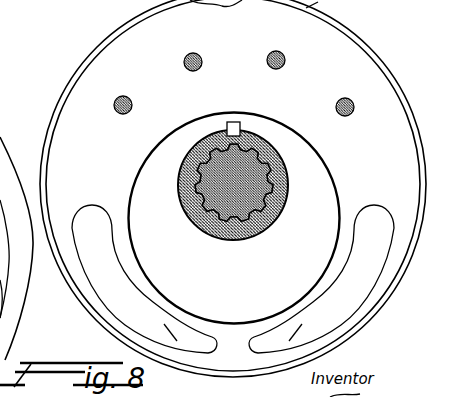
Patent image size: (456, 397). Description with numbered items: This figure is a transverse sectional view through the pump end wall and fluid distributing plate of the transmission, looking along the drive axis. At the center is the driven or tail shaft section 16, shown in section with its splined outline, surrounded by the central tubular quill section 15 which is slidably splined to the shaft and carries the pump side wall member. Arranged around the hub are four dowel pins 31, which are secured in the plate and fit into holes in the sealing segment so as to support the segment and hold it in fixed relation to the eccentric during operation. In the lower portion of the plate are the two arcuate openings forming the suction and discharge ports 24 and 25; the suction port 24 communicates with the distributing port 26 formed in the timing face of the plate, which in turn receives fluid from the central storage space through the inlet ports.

The central tubular quill section 15 is at (279, 212).
The driven or tail shaft section 16 is at (252, 182).
The suction port 24 is at (123, 290).
The discharge port 25 is at (345, 288).
The distributing port 26 is at (16, 232).
The dowel pins 31 is at (183, 62).